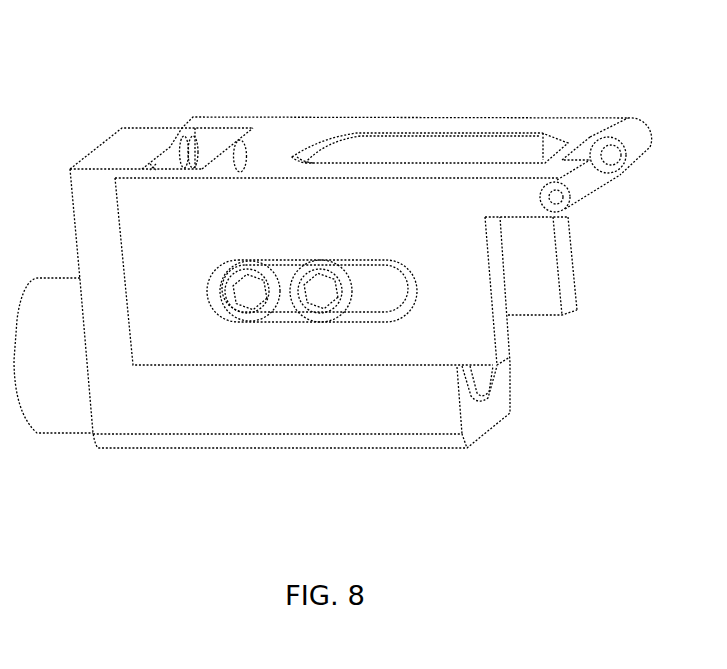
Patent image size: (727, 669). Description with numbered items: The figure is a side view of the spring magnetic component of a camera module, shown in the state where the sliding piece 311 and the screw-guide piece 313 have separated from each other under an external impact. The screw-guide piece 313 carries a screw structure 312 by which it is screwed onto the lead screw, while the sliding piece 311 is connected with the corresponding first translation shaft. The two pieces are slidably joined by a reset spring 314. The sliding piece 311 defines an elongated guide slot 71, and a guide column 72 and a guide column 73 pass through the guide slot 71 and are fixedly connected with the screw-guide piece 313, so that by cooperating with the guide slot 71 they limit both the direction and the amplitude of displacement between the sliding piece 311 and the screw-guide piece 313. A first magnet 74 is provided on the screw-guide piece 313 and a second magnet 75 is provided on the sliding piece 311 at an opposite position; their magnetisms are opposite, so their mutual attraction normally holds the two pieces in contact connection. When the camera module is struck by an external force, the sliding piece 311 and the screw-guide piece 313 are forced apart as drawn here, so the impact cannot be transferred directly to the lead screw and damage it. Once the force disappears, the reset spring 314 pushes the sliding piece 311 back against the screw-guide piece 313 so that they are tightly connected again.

The sliding piece 311 is at (570, 132).
The screw structure 312 is at (48, 327).
The screw-guide piece 313 is at (136, 155).
The reset spring 314 is at (301, 132).
The guide slot 71 is at (212, 290).
The guide column 72 is at (272, 290).
The guide column 73 is at (345, 290).
The first magnet 74 is at (182, 143).
The second magnet 75 is at (239, 142).